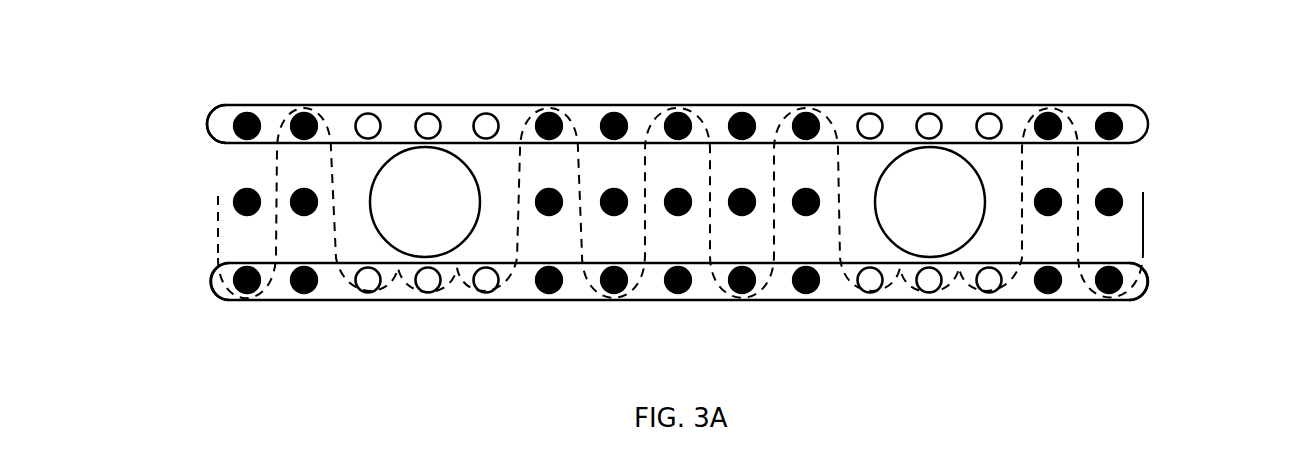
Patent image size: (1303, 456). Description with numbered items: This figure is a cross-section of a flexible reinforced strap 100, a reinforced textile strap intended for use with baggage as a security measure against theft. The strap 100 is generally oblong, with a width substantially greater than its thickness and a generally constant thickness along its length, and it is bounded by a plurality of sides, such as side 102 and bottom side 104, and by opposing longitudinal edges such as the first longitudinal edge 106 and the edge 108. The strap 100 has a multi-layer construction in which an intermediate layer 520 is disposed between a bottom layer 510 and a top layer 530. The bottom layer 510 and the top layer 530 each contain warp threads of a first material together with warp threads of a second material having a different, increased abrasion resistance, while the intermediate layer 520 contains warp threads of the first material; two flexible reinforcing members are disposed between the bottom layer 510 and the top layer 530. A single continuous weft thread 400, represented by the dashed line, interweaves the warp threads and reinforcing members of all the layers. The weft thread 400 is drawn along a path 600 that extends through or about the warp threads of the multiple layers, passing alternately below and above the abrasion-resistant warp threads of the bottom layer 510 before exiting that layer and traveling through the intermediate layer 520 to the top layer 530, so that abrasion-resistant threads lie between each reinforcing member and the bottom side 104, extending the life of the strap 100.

The flexible reinforced strap 100 is at (1200, 91).
The side 102 is at (687, 103).
The bottom side 104 is at (680, 307).
The first longitudinal edge 106 is at (1157, 229).
The longitudinal edge 108 is at (208, 177).
The weft thread 400 is at (1150, 255).
The bottom layer 510 is at (210, 284).
The intermediate layer 520 is at (210, 202).
The top layer 530 is at (200, 127).
The path 600 is at (1156, 200).